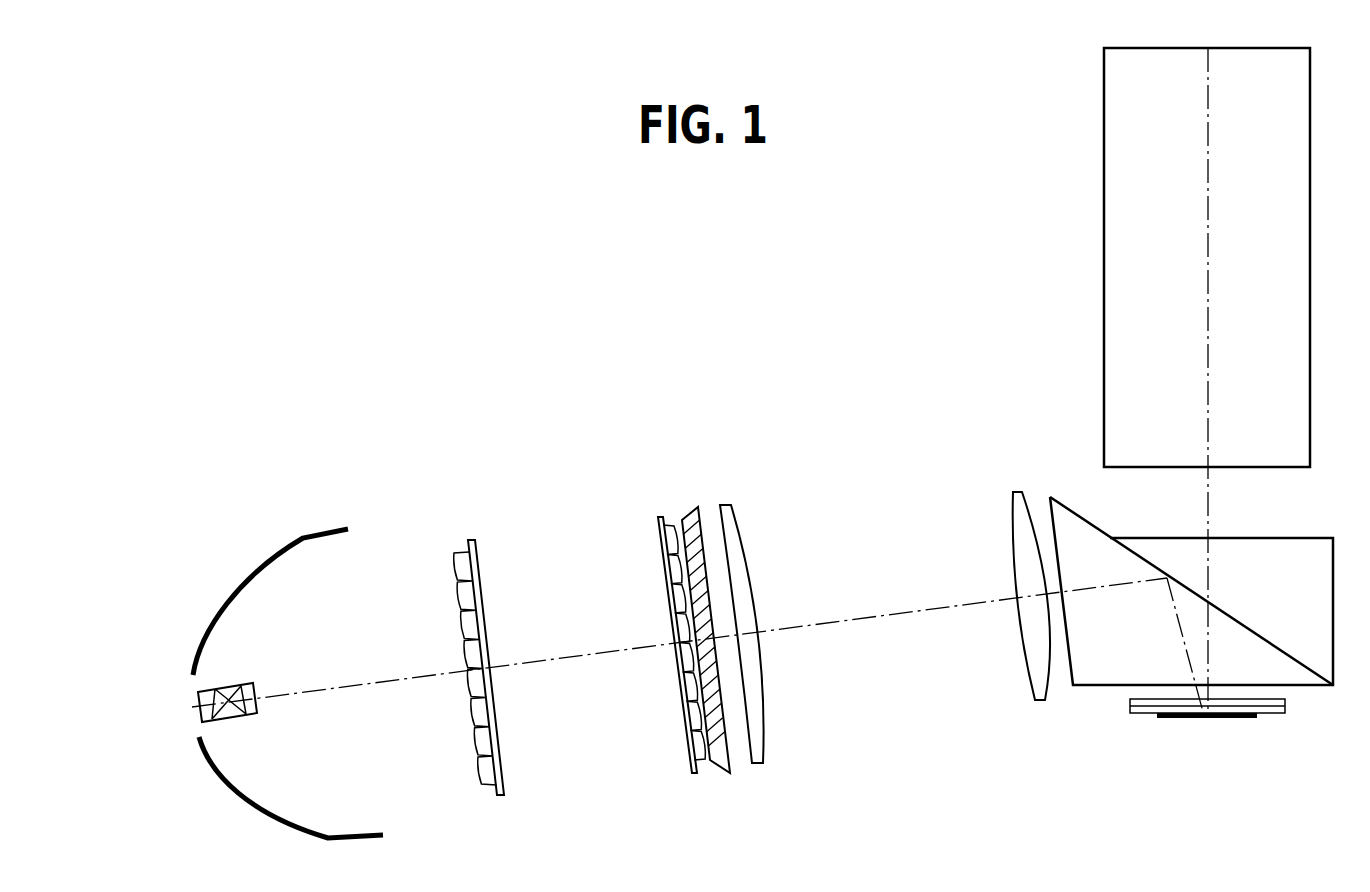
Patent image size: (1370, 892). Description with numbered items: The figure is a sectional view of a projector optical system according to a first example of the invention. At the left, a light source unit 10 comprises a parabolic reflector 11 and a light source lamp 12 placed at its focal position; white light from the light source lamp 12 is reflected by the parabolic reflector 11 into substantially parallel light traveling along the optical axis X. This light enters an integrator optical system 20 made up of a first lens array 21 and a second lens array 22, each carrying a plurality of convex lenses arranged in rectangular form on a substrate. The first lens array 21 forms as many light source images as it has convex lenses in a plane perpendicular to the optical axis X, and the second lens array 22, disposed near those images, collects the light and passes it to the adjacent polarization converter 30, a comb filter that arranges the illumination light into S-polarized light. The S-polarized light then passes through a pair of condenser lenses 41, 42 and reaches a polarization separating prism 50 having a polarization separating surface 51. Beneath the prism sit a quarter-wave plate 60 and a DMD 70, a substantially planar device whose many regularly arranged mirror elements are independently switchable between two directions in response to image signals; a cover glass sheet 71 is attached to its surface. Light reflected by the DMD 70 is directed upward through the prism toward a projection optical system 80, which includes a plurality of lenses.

The light source unit 10 is at (288, 642).
The parabolic reflector 11 is at (270, 568).
The light source lamp 12 is at (230, 688).
The integrator optical system 20 is at (573, 496).
The first lens array 21 is at (465, 540).
The second lens array 22 is at (667, 520).
The polarization converter 30 is at (690, 516).
The condenser lens 41 is at (725, 505).
The condenser lens 42 is at (1018, 492).
The polarization separating prism 50 is at (1210, 591).
The polarization separating surface 51 is at (1270, 643).
The quarter-wave plate 60 is at (1287, 700).
The DMD 70 is at (1245, 749).
The cover glass sheet 71 is at (1287, 715).
The projection optical system 80 is at (1104, 262).
The optical axis X is at (332, 690).